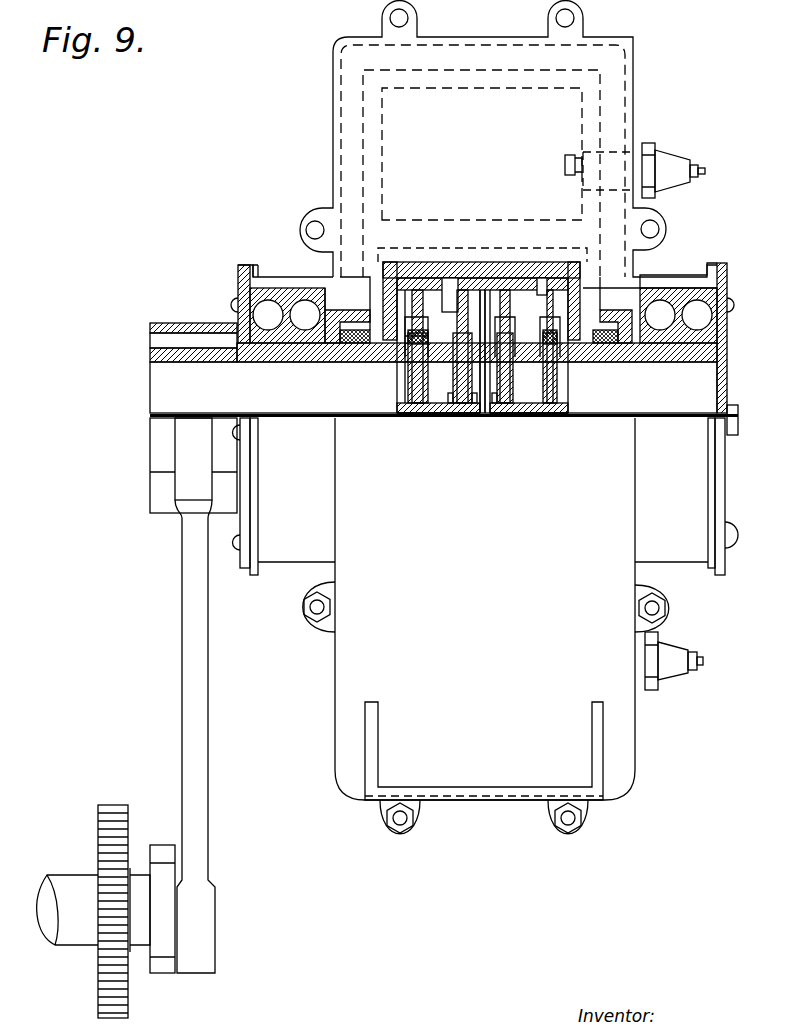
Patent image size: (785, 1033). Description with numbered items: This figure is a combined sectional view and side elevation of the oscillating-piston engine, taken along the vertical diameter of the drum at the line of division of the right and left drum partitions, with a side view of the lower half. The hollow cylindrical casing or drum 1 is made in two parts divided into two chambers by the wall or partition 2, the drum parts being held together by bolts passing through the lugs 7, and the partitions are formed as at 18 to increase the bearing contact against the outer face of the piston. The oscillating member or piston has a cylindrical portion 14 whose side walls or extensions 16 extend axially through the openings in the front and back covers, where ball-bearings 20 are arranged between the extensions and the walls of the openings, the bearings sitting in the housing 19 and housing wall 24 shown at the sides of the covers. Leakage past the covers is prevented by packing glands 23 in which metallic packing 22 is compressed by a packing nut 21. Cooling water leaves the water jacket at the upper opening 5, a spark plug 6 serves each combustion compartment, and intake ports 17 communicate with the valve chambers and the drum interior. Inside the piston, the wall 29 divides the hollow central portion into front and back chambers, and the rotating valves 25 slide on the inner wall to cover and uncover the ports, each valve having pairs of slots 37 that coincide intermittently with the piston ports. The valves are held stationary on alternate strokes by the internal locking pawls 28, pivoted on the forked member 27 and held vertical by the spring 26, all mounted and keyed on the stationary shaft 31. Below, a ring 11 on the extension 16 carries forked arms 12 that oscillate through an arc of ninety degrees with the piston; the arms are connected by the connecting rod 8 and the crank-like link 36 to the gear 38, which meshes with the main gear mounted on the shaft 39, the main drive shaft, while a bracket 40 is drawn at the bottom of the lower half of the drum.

The casing or drum 1 is at (592, 84).
The wall or partition 2 is at (481, 173).
The upper opening 5 is at (630, 90).
The spark plug 6 is at (668, 166).
The lugs 7 is at (578, 20).
The connecting rod 8 is at (192, 470).
The ring 11 is at (160, 326).
The forked arms 12 is at (162, 445).
The cylindrical portion 14 is at (510, 266).
The side or end walls or extensions 16 is at (162, 350).
The intake ports 17 is at (705, 382).
The partition bearing portion 18 is at (435, 232).
The housing 19 is at (256, 270).
The ball-bearings 20 is at (290, 294).
The packing nut 21 is at (330, 360).
The metallic packing 22 is at (363, 360).
The packing glands 23 is at (606, 342).
The housing wall 24 is at (238, 270).
The rotating exhaust valve 25 is at (423, 288).
The spring 26 is at (406, 383).
The forked member 27 is at (437, 408).
The locking pawls 28 is at (420, 298).
The wall 29 is at (493, 413).
The stationary shaft 31 is at (675, 418).
The link 36 is at (162, 856).
The slots or ports 37 is at (452, 290).
The gear 38 is at (112, 812).
The shaft 39 is at (88, 937).
The bracket 40 is at (495, 796).